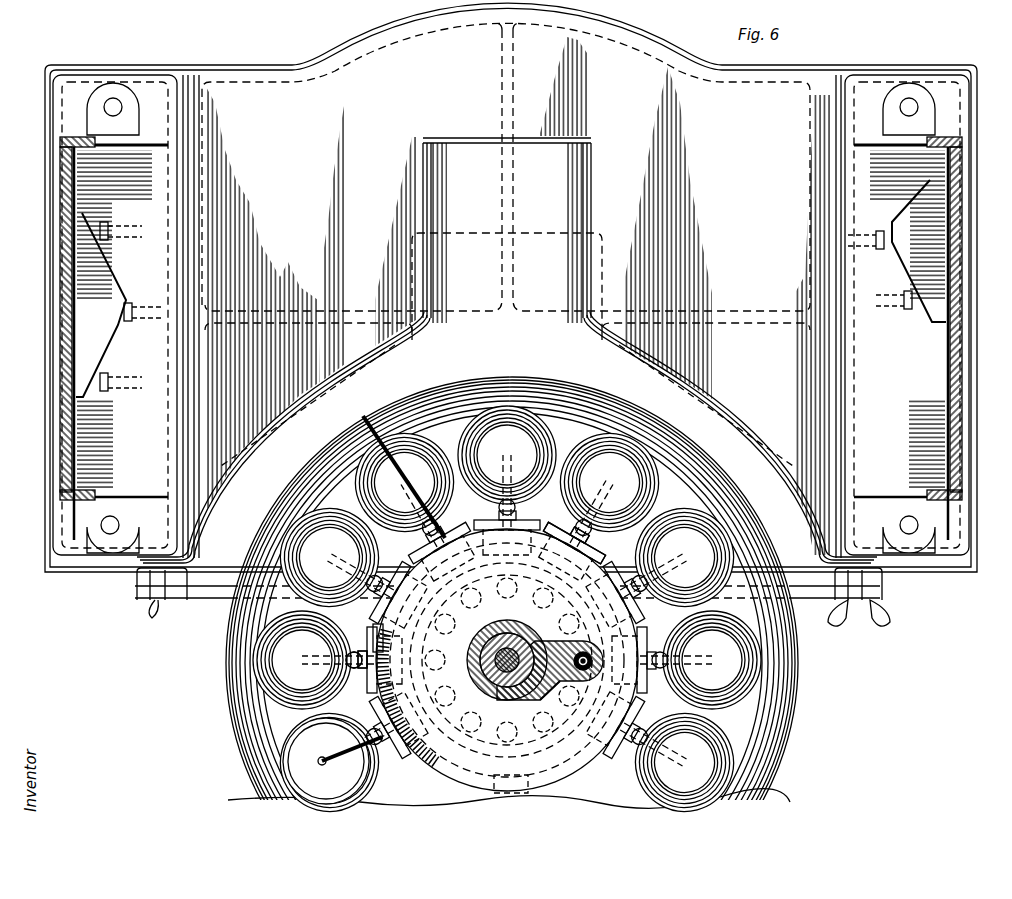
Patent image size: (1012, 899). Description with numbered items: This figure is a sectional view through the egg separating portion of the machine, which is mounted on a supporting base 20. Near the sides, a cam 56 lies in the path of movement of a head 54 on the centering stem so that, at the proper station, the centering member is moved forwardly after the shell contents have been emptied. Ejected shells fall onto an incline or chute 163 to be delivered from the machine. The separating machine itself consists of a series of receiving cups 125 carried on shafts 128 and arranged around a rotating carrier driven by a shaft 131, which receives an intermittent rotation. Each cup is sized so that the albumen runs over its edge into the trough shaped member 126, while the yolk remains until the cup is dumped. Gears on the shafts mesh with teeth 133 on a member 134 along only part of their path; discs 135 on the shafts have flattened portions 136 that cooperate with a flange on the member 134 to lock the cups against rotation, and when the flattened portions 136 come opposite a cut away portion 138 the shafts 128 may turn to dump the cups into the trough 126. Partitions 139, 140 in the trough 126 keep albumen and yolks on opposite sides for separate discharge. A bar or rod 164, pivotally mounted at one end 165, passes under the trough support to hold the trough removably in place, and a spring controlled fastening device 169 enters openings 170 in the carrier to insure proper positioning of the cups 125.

The supporting base 20 is at (276, 85).
The head 54 is at (110, 222).
The cam 56 is at (80, 346).
The receiving cups 125 is at (258, 662).
The trough shaped member 126 is at (518, 377).
The shafts 128 is at (344, 761).
The shaft 131 is at (537, 641).
The teeth 133 is at (378, 698).
The member 134 is at (575, 582).
The discs 135 is at (350, 665).
The flattened portions 136 is at (398, 634).
The cut away portion 138 is at (402, 632).
The partition 139 is at (405, 398).
The partition 140 is at (514, 774).
The incline or chute 163 is at (575, 174).
The bar or rod 164 is at (205, 600).
The pivot 165 is at (150, 602).
The spring controlled fastening device 169 is at (554, 684).
The openings 170 is at (482, 600).